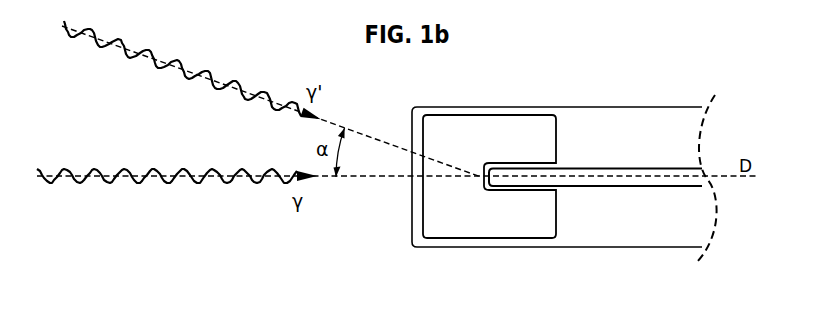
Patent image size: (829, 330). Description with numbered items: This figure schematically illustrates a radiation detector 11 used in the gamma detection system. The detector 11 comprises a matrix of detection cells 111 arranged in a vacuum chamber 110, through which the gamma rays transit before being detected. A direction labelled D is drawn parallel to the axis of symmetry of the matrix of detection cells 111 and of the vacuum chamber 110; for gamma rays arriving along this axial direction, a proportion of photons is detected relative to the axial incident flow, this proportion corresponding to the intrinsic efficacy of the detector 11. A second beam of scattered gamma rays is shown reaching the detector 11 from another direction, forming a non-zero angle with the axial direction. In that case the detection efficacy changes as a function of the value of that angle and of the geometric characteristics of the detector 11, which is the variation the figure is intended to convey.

The radiation detector 11 is at (564, 180).
The vacuum chamber 110 is at (621, 228).
The matrix of detection cells 111 is at (493, 132).